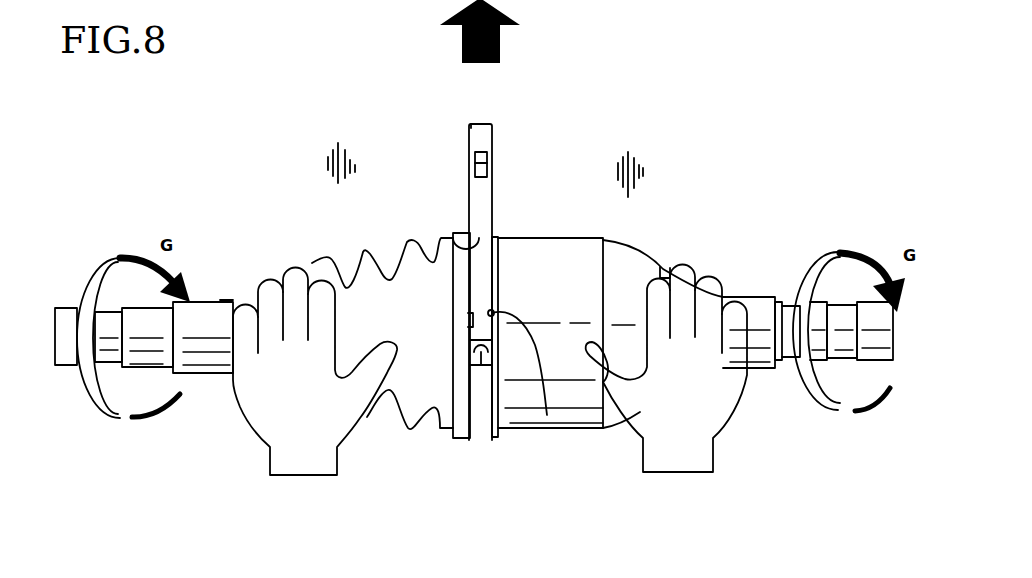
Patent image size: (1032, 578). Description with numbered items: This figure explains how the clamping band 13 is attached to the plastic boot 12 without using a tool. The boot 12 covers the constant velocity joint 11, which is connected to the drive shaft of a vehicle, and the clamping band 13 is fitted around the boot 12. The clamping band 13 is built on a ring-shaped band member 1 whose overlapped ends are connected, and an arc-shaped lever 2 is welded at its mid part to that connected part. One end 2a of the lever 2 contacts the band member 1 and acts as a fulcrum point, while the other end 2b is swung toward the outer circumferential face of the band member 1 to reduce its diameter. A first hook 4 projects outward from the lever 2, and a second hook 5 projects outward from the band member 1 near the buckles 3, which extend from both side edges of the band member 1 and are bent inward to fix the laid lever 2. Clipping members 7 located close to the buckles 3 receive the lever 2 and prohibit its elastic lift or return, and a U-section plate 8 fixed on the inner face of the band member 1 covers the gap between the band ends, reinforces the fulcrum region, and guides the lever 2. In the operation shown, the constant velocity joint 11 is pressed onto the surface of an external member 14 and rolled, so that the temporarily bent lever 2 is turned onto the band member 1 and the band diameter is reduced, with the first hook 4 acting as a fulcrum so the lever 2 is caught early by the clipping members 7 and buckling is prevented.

The band member 1 is at (481, 296).
The lever 2 is at (488, 193).
The one end of the lever 2a is at (450, 238).
The other end of the lever 2b is at (483, 122).
The buckles 3 is at (497, 330).
The first hook 4 is at (488, 164).
The second hook 5 is at (476, 367).
The clipping members 7 is at (547, 415).
The plate 8 is at (498, 272).
The constant velocity joint 11 is at (570, 247).
The plastic boot 12 is at (362, 240).
The clamping band 13 is at (454, 198).
The external member 14 is at (642, 183).